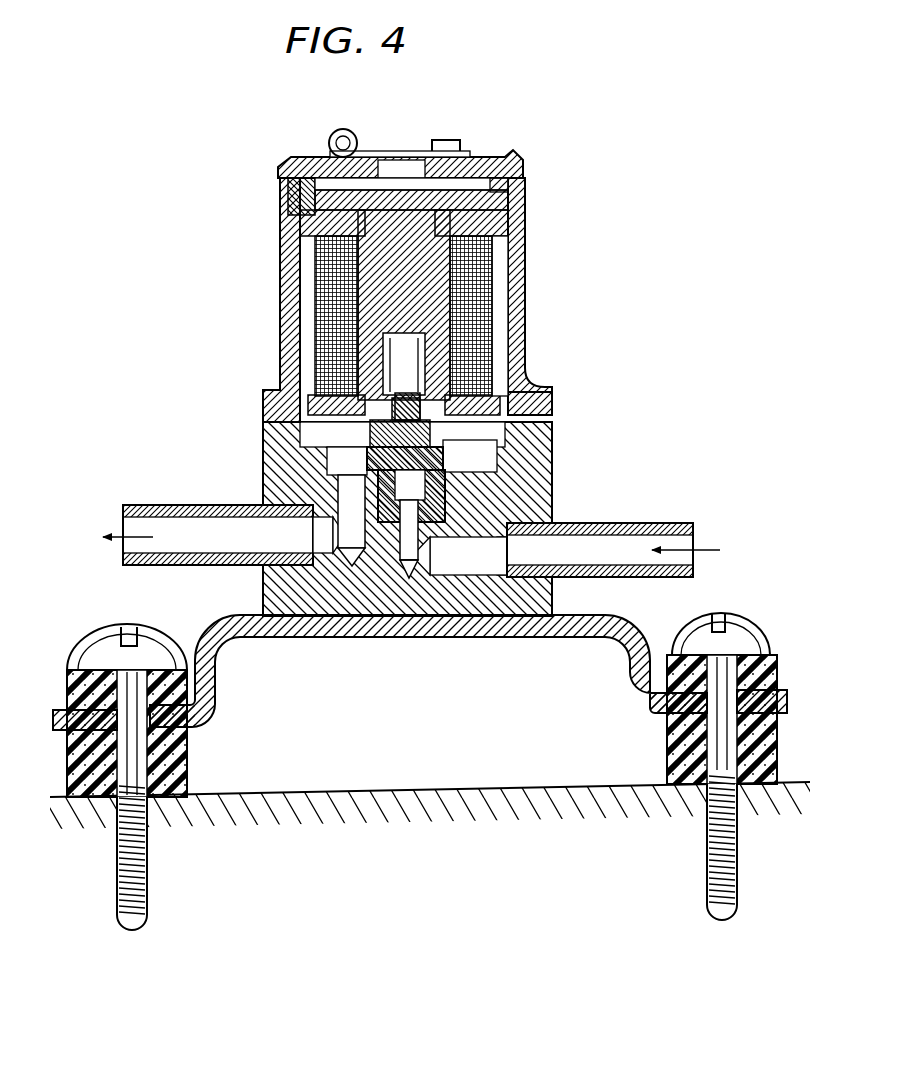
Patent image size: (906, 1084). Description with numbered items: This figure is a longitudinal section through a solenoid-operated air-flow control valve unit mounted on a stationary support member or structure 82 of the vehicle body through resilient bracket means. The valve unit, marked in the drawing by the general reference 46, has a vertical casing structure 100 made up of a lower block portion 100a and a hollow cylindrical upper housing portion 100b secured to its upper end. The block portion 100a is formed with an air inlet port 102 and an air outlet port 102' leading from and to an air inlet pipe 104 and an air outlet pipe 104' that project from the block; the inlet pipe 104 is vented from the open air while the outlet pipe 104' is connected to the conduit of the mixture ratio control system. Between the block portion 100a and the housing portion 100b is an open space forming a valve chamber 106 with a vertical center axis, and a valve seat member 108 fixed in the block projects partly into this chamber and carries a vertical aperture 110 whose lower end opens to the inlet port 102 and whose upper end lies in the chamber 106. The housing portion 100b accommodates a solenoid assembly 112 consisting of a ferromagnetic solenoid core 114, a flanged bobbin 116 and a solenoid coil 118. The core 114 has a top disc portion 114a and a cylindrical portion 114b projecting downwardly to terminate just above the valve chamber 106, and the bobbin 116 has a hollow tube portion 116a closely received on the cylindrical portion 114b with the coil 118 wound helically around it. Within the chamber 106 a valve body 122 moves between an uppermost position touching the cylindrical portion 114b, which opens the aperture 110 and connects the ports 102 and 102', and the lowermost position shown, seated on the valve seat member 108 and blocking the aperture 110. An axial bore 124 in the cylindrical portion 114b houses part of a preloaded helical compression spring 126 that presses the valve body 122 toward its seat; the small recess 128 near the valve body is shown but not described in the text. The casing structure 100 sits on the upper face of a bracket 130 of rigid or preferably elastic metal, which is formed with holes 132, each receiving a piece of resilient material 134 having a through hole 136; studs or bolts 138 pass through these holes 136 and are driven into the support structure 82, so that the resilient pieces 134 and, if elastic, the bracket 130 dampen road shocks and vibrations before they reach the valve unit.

The solenoid valve assembly 46 is at (282, 152).
The support member or structure 82 is at (546, 783).
The casing structure 100 is at (261, 428).
The lower block portion 100a is at (549, 430).
The upper housing portion 100b is at (526, 338).
The air inlet port 102 is at (413, 623).
The air outlet port 102' is at (327, 541).
The air inlet pipe 104 is at (566, 570).
The air outlet pipe 104' is at (224, 558).
The valve chamber 106 is at (330, 467).
The valve seat member 108 is at (447, 548).
The vertical aperture 110 is at (405, 550).
The solenoid assembly 112 is at (318, 352).
The solenoid core 114 is at (286, 210).
The disc portion 114a is at (506, 216).
The cylindrical portion 114b is at (508, 253).
The flanged bobbin 116 is at (300, 252).
The tube portion 116a is at (490, 303).
The solenoid coil 118 is at (320, 304).
The valve body 122 is at (478, 482).
The axial bore 124 is at (401, 372).
The helical compression spring 126 is at (418, 296).
The chamber 128 is at (457, 462).
The bracket 130 is at (283, 640).
The holes 132 is at (186, 733).
The piece of resilient material 134 is at (188, 766).
The through hole 136 is at (138, 818).
The studs or bolts 138 is at (107, 627).